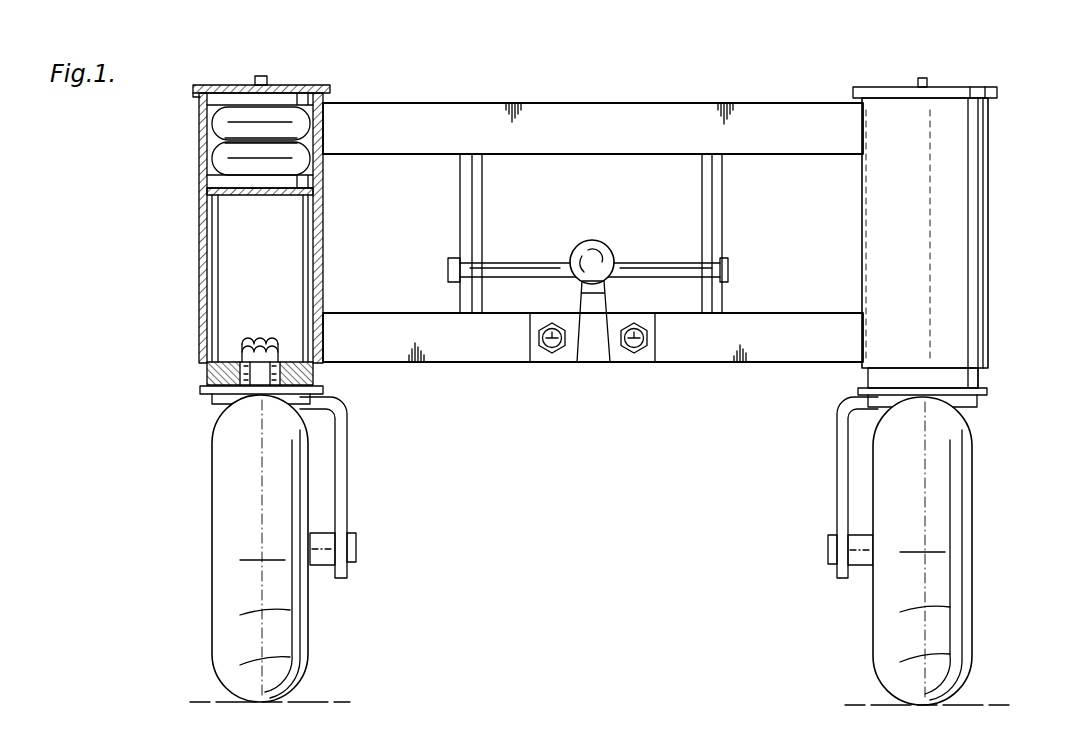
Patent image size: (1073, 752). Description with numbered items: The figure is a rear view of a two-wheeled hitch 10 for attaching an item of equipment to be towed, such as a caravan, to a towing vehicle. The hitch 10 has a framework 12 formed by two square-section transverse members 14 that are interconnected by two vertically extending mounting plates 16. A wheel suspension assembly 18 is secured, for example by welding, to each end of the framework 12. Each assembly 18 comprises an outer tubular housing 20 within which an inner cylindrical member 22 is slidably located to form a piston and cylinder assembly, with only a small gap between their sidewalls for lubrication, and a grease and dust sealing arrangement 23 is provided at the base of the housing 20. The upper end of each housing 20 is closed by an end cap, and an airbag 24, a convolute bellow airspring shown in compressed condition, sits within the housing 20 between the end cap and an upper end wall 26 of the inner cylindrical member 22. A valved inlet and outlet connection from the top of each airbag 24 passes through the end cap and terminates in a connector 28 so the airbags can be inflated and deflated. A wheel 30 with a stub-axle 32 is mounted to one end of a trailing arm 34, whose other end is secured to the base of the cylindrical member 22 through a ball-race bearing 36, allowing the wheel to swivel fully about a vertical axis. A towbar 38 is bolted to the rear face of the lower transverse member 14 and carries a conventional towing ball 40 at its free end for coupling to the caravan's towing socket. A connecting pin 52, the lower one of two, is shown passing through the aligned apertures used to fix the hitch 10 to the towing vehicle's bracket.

The two-wheeled hitch 10 is at (593, 247).
The framework 12 is at (458, 216).
The transverse member 14 is at (787, 73).
The mounting plate 16 is at (460, 168).
The wheel suspension assembly 18 is at (990, 184).
The outer tubular housing 20 is at (200, 278).
The inner cylindrical member 22 is at (327, 88).
The grease and dust sealing arrangement 23 is at (323, 365).
The airbag 24 is at (218, 124).
The upper end wall 26 is at (212, 210).
The connector 28 is at (266, 78).
The wheel 30 is at (213, 645).
The stub-axle 32 is at (325, 568).
The trailing arm 34 is at (347, 485).
The ball-race bearing 36 is at (205, 380).
The towbar 38 is at (570, 365).
The towing ball 40 is at (610, 210).
The connecting pin 52 is at (553, 262).